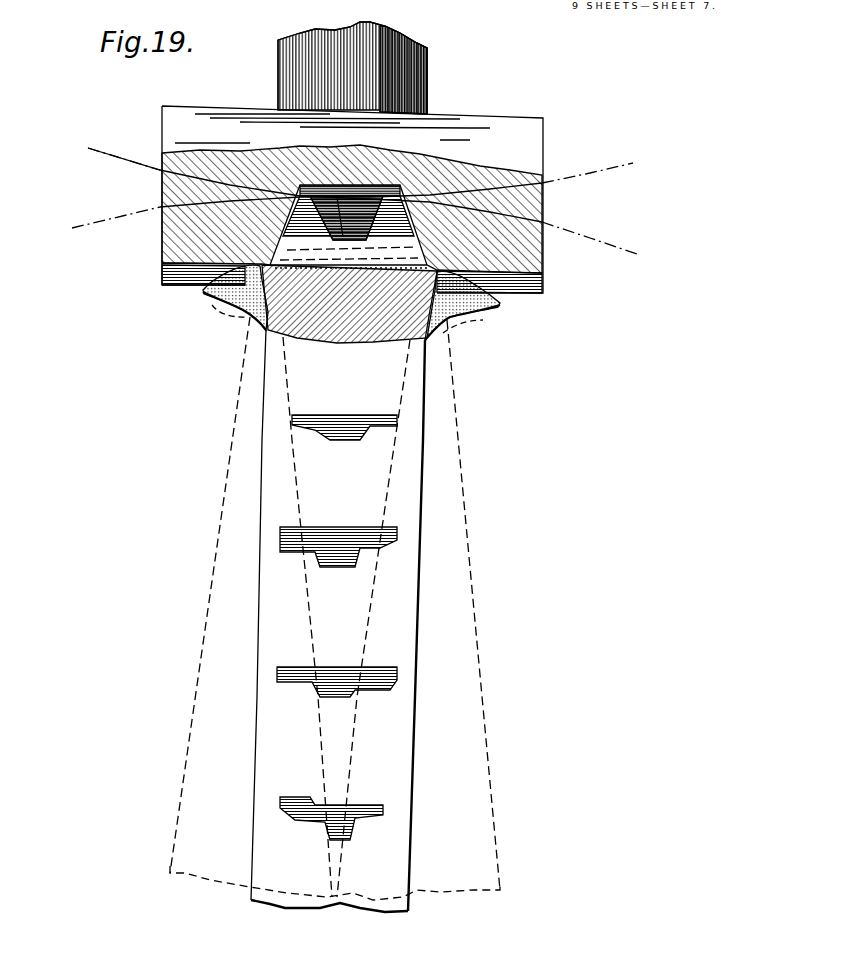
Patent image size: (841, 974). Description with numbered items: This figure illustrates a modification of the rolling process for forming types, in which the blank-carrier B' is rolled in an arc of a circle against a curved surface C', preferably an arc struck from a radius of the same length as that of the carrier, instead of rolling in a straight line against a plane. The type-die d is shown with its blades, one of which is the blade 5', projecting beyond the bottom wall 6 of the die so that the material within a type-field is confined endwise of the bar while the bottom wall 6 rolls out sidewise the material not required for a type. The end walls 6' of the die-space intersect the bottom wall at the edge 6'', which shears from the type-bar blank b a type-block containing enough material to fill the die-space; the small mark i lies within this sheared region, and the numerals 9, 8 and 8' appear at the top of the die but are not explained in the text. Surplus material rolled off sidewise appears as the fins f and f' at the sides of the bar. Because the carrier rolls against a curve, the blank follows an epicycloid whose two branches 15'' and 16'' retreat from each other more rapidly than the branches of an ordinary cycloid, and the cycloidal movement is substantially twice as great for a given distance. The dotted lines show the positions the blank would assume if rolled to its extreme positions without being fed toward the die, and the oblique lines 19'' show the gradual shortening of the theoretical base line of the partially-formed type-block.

The type-die d is at (352, 199).
The type-bar blank b is at (338, 621).
The bolt head recess i is at (352, 227).
The end wall of the die-space 6' is at (346, 156).
The bolt head 9 is at (306, 184).
The nut 8 is at (325, 159).
The nut face 8' is at (373, 158).
The curved surface C' is at (364, 188).
The blank-carrier B' is at (352, 211).
The die blade 5' is at (334, 277).
The bottom wall of the die 6 is at (205, 287).
The fin f is at (222, 297).
The right fillet / burr f' is at (463, 307).
The oblique lines 19'' is at (349, 296).
The branch of the epicycloid 15'' is at (335, 608).
The branch of the epicycloid 16'' is at (459, 605).
The shearing edge 6'' is at (309, 607).